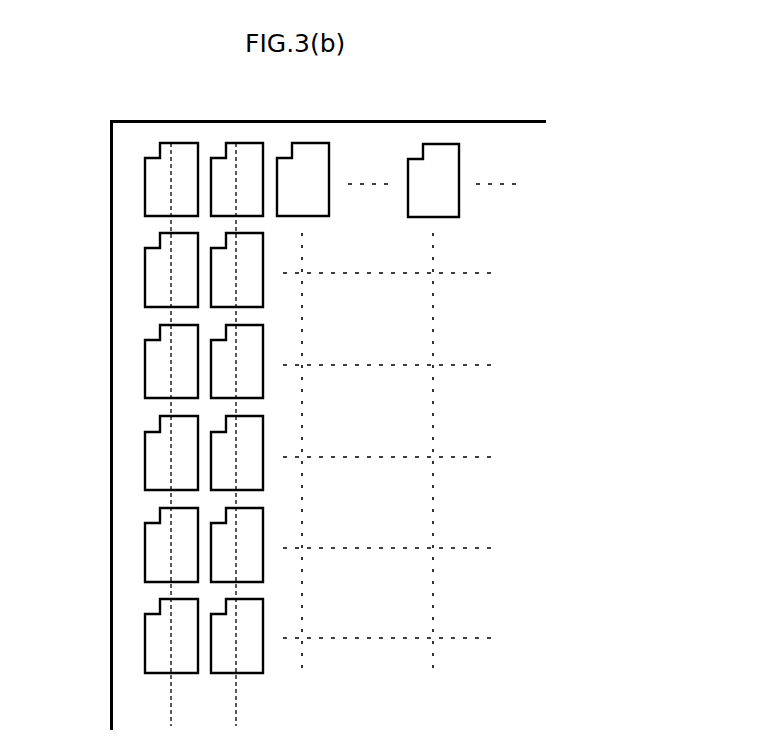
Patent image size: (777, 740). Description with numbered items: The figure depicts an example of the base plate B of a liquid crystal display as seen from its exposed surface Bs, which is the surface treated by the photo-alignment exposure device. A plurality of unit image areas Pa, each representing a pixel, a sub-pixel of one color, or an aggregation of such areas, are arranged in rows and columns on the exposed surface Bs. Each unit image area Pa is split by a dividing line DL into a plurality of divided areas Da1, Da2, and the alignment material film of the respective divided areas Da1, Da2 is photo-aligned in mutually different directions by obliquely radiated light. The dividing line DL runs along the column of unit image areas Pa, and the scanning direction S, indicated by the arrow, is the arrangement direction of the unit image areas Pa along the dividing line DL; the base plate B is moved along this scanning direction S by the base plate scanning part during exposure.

The base plate B is at (502, 121).
The exposed surface Bs is at (203, 141).
The unit image area Pa is at (143, 280).
The dividing line DL is at (171, 655).
The divided area Da1 is at (171, 678).
The divided area Da2 is at (197, 678).
The scanning direction S is at (63, 318).